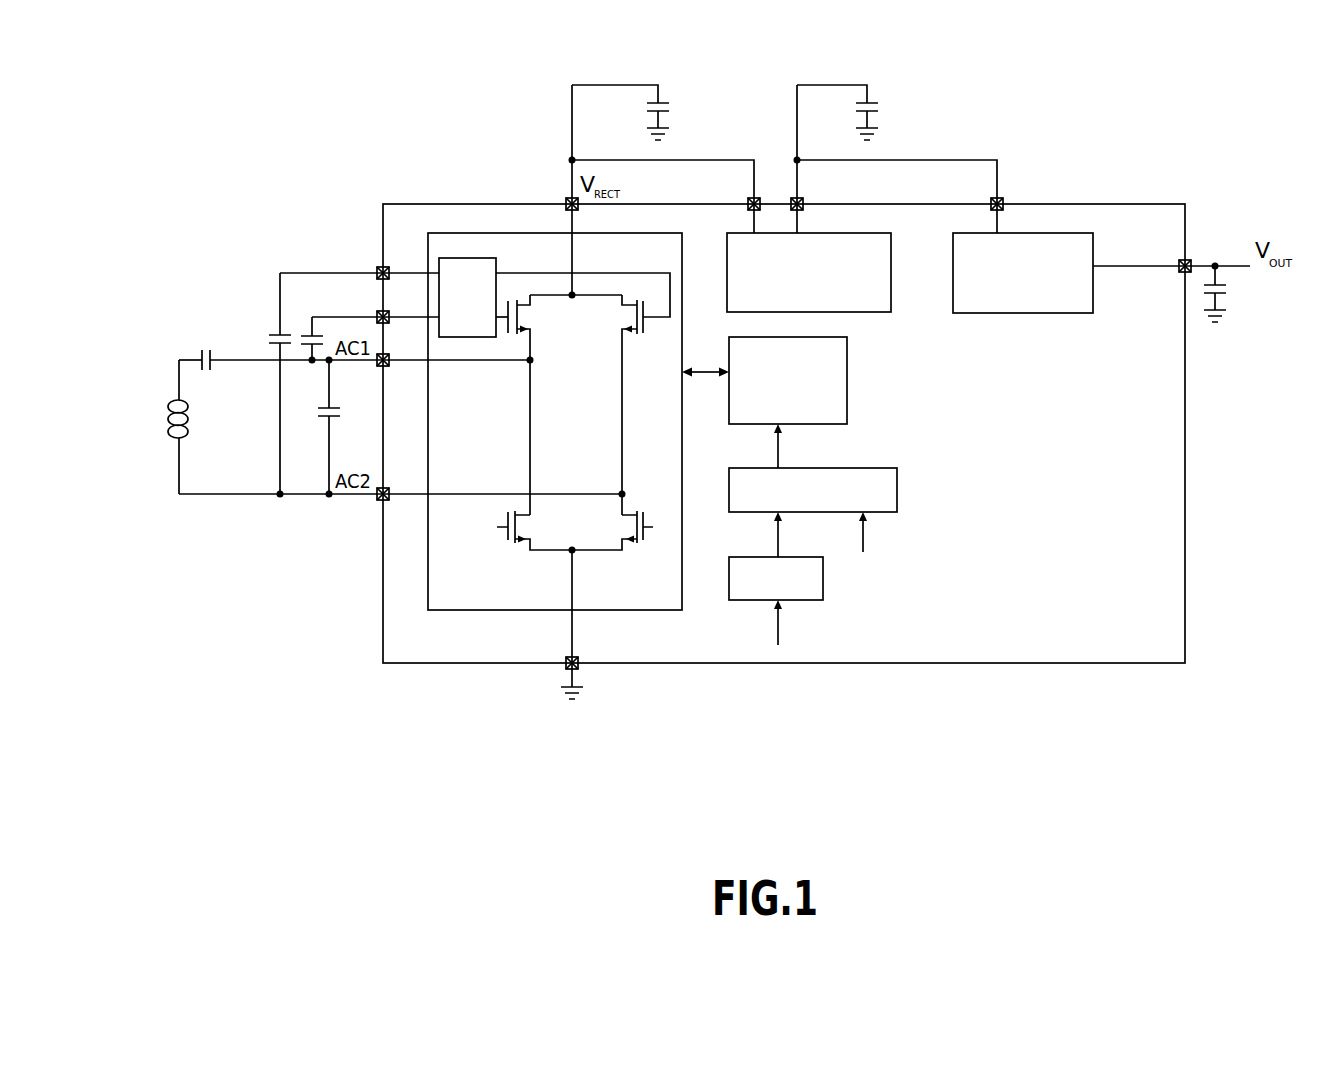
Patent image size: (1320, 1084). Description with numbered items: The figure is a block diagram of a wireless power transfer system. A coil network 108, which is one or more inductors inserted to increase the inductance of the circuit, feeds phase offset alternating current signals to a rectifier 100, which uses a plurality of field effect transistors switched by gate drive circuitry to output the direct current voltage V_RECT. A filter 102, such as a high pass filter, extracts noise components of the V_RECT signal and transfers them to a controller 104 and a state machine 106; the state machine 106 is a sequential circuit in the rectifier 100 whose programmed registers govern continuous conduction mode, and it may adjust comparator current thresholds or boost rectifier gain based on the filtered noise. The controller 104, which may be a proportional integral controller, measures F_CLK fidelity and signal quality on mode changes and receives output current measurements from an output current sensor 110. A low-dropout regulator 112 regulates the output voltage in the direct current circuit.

The rectifier 100 is at (428, 248).
The filter 102 is at (807, 600).
The controller 104 is at (897, 488).
The state machine 106 is at (847, 397).
The coil network 108 is at (162, 402).
The output current sensor 110 is at (857, 233).
The low-dropout regulator 112 is at (1052, 233).